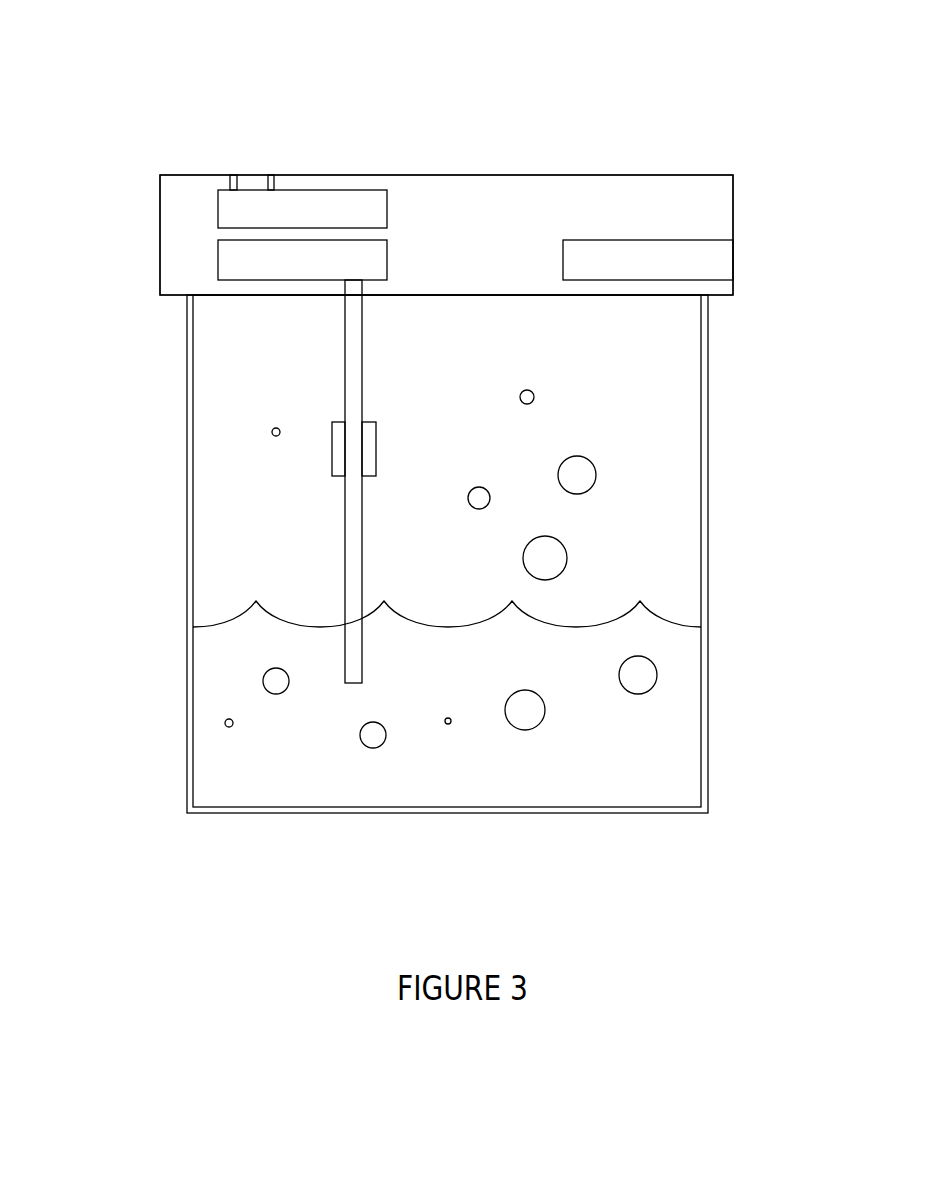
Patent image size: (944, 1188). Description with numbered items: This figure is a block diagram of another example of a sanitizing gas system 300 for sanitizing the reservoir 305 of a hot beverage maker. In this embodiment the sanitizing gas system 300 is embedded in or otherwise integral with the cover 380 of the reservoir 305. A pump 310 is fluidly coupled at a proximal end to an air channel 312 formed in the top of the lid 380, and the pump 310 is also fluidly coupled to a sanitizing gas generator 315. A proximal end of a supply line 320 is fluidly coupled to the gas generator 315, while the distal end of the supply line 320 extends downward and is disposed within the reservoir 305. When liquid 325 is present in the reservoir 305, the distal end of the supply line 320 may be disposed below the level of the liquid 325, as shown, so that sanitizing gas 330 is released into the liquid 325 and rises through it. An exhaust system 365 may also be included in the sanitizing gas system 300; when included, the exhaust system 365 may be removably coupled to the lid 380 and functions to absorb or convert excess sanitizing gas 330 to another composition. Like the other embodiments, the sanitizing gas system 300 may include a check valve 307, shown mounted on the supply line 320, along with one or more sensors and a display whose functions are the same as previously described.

The sanitizing gas system 300 is at (690, 166).
The reservoir 305 is at (187, 778).
The check valve 307 is at (332, 450).
The pump 310 is at (290, 190).
The air channel 312 is at (238, 175).
The sanitizing gas generator 315 is at (389, 240).
The supply line 320 is at (345, 520).
The liquid 325 is at (615, 743).
The sanitizing gas 330 is at (593, 467).
The exhaust system 365 is at (735, 262).
The cover 380 is at (510, 175).